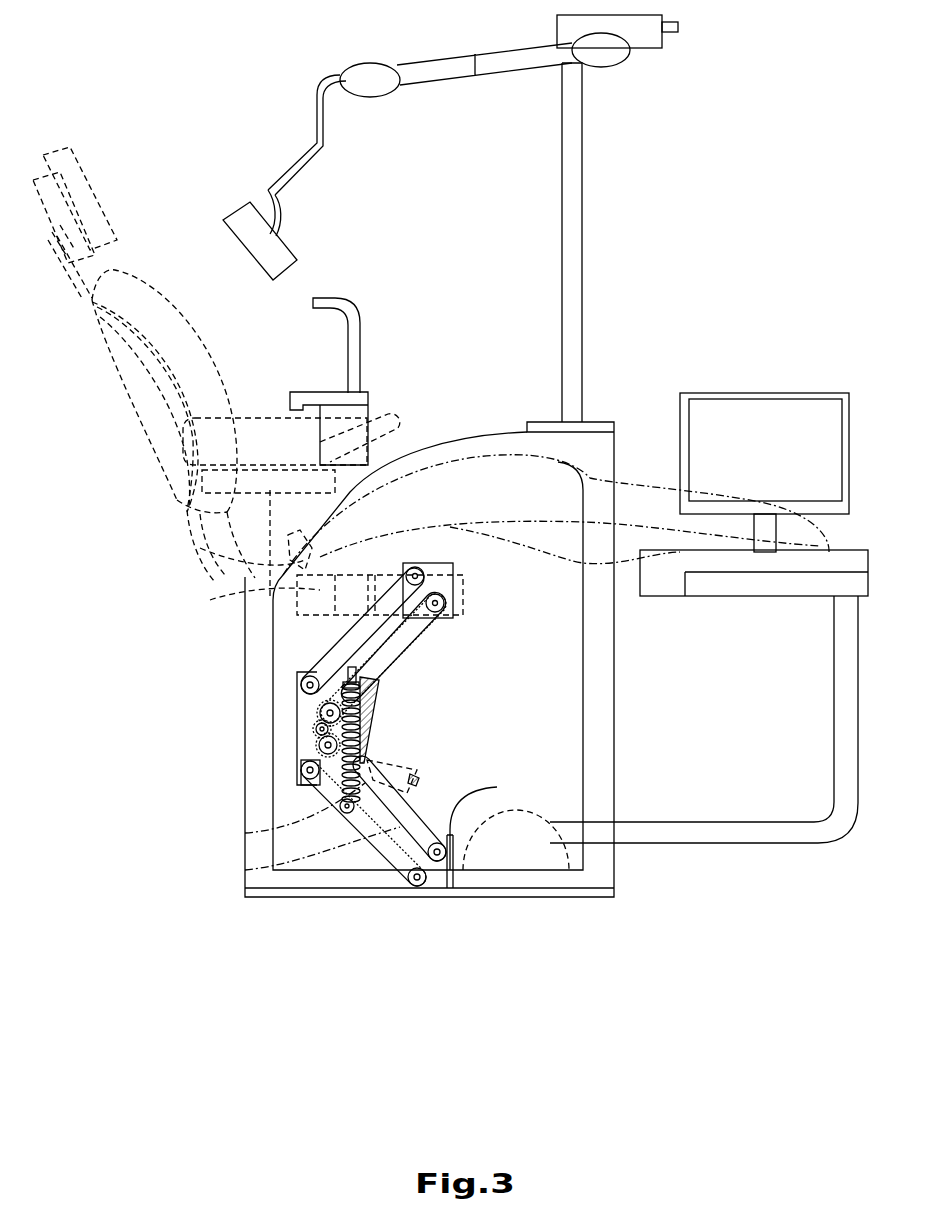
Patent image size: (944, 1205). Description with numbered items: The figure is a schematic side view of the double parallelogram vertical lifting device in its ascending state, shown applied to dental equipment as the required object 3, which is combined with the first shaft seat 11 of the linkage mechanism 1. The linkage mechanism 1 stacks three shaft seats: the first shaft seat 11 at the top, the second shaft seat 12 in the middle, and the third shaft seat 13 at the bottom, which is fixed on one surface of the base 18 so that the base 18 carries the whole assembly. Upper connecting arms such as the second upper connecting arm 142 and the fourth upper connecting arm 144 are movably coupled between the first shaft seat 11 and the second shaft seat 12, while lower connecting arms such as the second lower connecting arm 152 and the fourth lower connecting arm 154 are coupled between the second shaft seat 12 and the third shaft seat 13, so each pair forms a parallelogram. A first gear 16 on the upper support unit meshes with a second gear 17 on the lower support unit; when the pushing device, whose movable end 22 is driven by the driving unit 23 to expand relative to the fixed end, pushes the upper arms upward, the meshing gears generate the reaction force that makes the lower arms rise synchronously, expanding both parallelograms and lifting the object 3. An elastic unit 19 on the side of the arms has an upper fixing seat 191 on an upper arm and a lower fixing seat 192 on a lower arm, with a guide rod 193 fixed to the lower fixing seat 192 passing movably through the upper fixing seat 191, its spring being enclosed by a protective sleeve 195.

The object 3 is at (642, 332).
The linkage mechanism 1 is at (288, 674).
The first shaft seat 11 is at (452, 582).
The second shaft seat 12 is at (316, 750).
The third shaft seat 13 is at (470, 798).
The first gear 16 is at (318, 717).
The second gear 17 is at (314, 733).
The base 18 is at (352, 893).
The elastic unit 19 is at (390, 722).
The movable end 22 is at (375, 686).
The driving unit 23 is at (419, 771).
The second upper connecting arm 142 is at (420, 636).
The fourth upper connecting arm 144 is at (290, 598).
The second lower connecting arm 152 is at (378, 836).
The fourth lower connecting arm 154 is at (410, 812).
The upper fixing seat 191 is at (300, 690).
The lower fixing seat 192 is at (340, 806).
The guide rod 193 is at (380, 656).
The protective sleeve 195 is at (365, 762).